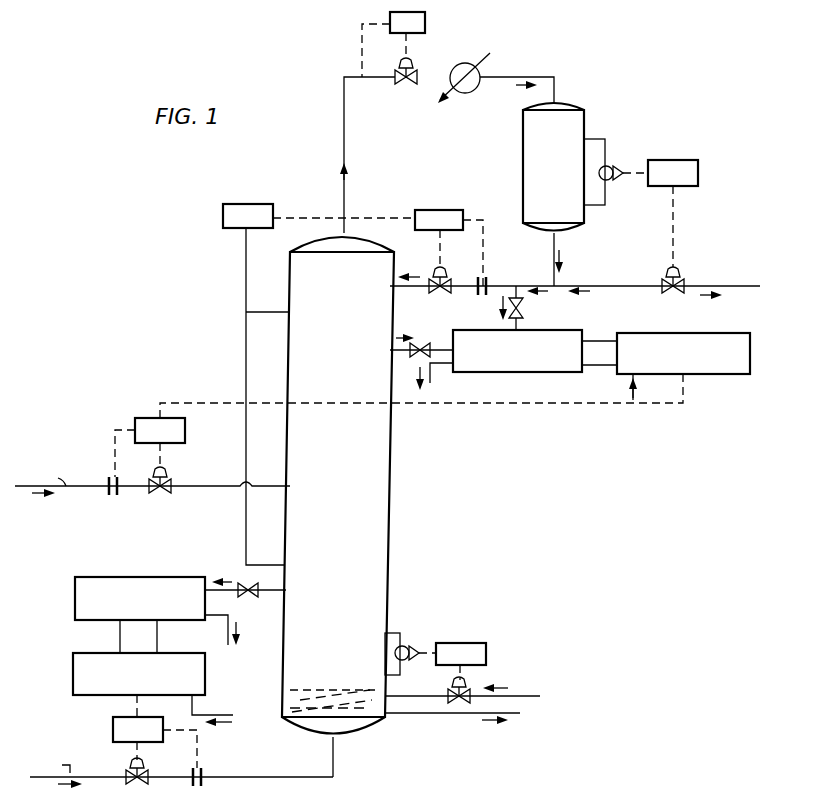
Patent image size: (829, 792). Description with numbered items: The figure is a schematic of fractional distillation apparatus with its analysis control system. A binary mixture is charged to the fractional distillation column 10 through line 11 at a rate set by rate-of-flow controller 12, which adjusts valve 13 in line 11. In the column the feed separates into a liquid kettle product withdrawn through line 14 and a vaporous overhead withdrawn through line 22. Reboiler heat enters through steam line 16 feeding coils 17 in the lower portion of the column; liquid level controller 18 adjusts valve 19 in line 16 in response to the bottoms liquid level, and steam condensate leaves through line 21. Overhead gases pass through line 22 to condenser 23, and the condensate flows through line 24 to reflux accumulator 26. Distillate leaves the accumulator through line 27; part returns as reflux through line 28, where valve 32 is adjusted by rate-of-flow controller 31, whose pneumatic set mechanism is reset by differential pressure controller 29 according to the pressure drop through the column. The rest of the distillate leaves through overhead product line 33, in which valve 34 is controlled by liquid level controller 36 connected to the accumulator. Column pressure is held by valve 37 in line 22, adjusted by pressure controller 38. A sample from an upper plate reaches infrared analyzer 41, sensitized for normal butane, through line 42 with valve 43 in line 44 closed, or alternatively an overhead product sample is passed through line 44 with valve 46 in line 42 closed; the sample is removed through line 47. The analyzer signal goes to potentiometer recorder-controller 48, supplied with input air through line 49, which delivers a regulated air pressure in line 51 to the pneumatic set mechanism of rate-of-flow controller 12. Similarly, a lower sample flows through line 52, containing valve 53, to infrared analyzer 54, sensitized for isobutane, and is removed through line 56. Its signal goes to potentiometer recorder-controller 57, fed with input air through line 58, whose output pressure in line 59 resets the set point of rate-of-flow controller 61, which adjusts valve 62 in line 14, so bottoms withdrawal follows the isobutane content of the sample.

The fractional distillation column 10 is at (284, 514).
The feed line 11 is at (202, 488).
The rate-of-flow controller 12 is at (185, 434).
The valve 13 is at (165, 494).
The kettle product line 14 is at (334, 765).
The steam line 16 is at (510, 696).
The coils 17 is at (336, 690).
The liquid level controller 18 is at (486, 656).
The valve 19 is at (452, 690).
The condensate line 21 is at (443, 715).
The overhead line 22 is at (344, 135).
The condenser 23 is at (469, 93).
The condensate line 24 is at (490, 76).
The reflux accumulator 26 is at (567, 104).
The discharge line 27 is at (560, 284).
The reflux line 28 is at (505, 284).
The differential pressure controller 29 is at (273, 206).
The rate-of-flow controller 31 is at (451, 210).
The valve 32 is at (444, 270).
The overhead product line 33 is at (603, 284).
The valve 34 is at (683, 280).
The liquid level controller 36 is at (691, 160).
The valve 37 is at (422, 70).
The pressure controller 38 is at (424, 26).
The infrared analyzer 41 is at (541, 372).
The sample line 42 is at (397, 350).
The valve 43 is at (523, 306).
The sample line 44 is at (521, 326).
The valve 46 is at (429, 343).
The sample removal line 47 is at (433, 378).
The potentiometer recorder-controller 48 is at (713, 376).
The input air line 49 is at (640, 384).
The output air pressure line 51 is at (686, 403).
The sample line 52 is at (267, 594).
The valve 53 is at (246, 584).
The infrared analyzer 54 is at (80, 588).
The sample removal line 56 is at (226, 634).
The potentiometer recorder-controller 57 is at (205, 676).
The input air line 58 is at (213, 715).
The output air pressure line 59 is at (132, 706).
The rate-of-flow controller 61 is at (113, 730).
The valve 62 is at (150, 770).